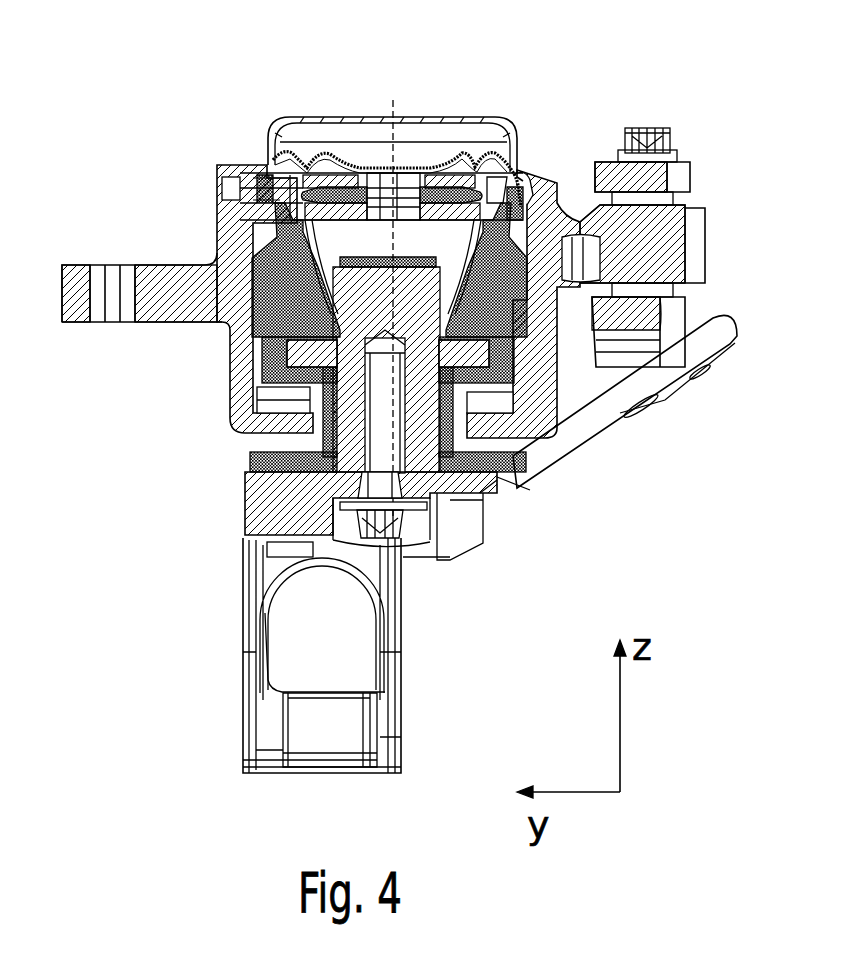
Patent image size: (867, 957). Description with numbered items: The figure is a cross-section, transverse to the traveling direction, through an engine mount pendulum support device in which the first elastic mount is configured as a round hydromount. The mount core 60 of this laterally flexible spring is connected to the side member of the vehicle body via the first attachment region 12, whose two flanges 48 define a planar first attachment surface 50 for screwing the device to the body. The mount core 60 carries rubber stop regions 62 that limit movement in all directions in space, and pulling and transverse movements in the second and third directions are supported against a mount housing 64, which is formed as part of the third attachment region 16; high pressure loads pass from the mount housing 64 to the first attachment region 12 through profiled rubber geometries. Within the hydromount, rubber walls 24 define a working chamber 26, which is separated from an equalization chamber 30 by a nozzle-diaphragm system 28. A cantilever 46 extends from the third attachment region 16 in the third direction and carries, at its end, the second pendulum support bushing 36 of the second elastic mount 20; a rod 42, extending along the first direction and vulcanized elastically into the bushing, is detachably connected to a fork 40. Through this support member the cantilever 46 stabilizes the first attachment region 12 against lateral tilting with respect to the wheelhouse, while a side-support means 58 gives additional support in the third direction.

The first attachment region 12 is at (238, 762).
The third attachment region 16 is at (160, 262).
The second elastic mount 20 is at (705, 192).
The rubber walls 24 is at (505, 232).
The working chamber 26 is at (317, 262).
The nozzle-diaphragm system 28 is at (280, 175).
The equalization chamber 30 is at (290, 158).
The second pendulum support bushing 36 is at (697, 247).
The fork 40 is at (673, 318).
The rod 42 is at (645, 126).
The cantilever 46 is at (577, 228).
The flanges 48 is at (263, 715).
The first attachment surface 50 is at (297, 772).
The side-support means 58 is at (605, 428).
The mount core 60 is at (297, 360).
The rubber stop regions 62 is at (272, 352).
The mount housing 64 is at (244, 406).